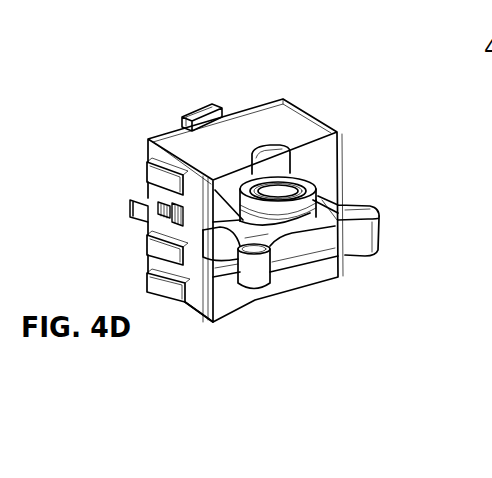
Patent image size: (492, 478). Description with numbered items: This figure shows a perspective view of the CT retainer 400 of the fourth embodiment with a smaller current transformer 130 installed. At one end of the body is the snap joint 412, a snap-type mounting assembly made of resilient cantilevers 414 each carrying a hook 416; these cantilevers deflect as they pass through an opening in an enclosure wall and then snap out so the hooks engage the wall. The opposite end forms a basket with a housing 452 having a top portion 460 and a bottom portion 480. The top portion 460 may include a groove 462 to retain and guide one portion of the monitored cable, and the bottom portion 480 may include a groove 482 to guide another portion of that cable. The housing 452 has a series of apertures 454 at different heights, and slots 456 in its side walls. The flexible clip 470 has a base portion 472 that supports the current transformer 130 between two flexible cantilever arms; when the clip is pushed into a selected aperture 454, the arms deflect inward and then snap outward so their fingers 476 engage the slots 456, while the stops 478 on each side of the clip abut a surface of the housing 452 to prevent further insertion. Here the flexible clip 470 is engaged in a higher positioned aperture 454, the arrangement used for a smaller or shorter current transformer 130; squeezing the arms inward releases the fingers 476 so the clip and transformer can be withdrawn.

The CT retainer 400 is at (104, 92).
The snap joint 412 is at (181, 111).
The resilient cantilevers 414 is at (221, 100).
The hook 416 is at (203, 100).
The housing 452 is at (291, 94).
The apertures 454 is at (337, 152).
The slots 456 is at (146, 158).
The top portion 460 is at (303, 130).
The groove 462 is at (296, 165).
The flexible clip 470 is at (317, 258).
The base portion 472 is at (327, 222).
The fingers 476 is at (158, 214).
The stops 478 is at (347, 190).
The bottom portion 480 is at (184, 299).
The groove 482 is at (284, 308).
The current transformer 130 is at (336, 197).